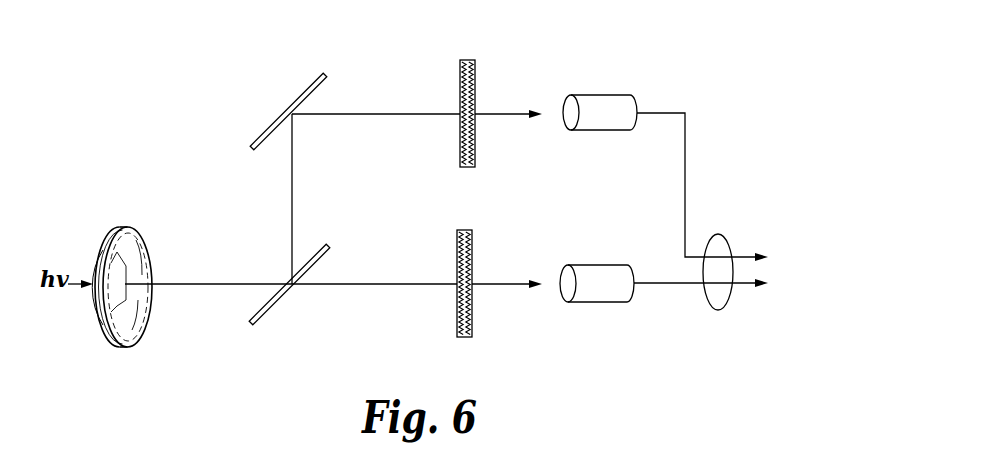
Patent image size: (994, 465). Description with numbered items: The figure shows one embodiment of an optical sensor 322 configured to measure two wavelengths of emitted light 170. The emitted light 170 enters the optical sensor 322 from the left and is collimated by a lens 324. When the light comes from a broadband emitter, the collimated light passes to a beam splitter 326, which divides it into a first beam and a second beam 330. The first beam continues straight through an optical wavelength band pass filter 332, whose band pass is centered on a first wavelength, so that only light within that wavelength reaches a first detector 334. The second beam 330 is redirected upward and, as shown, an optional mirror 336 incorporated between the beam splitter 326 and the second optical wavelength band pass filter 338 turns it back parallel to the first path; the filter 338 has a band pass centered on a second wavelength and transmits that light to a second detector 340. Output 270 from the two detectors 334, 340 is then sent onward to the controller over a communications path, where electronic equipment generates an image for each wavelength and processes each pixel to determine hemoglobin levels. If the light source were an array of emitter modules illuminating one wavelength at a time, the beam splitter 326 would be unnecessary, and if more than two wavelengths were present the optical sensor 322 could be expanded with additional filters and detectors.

The emitted light 170 is at (67, 267).
The lens 324 is at (143, 340).
The beam splitter 326 is at (272, 308).
The second beam 330 is at (291, 228).
The mirror 336 is at (273, 122).
The optical wavelength band pass filter 338 is at (475, 72).
The optical wavelength band pass filter 332 is at (472, 257).
The second detector 340 is at (635, 104).
The first detector 334 is at (632, 273).
The output 270 is at (718, 234).
The optical sensor 322 is at (718, 66).